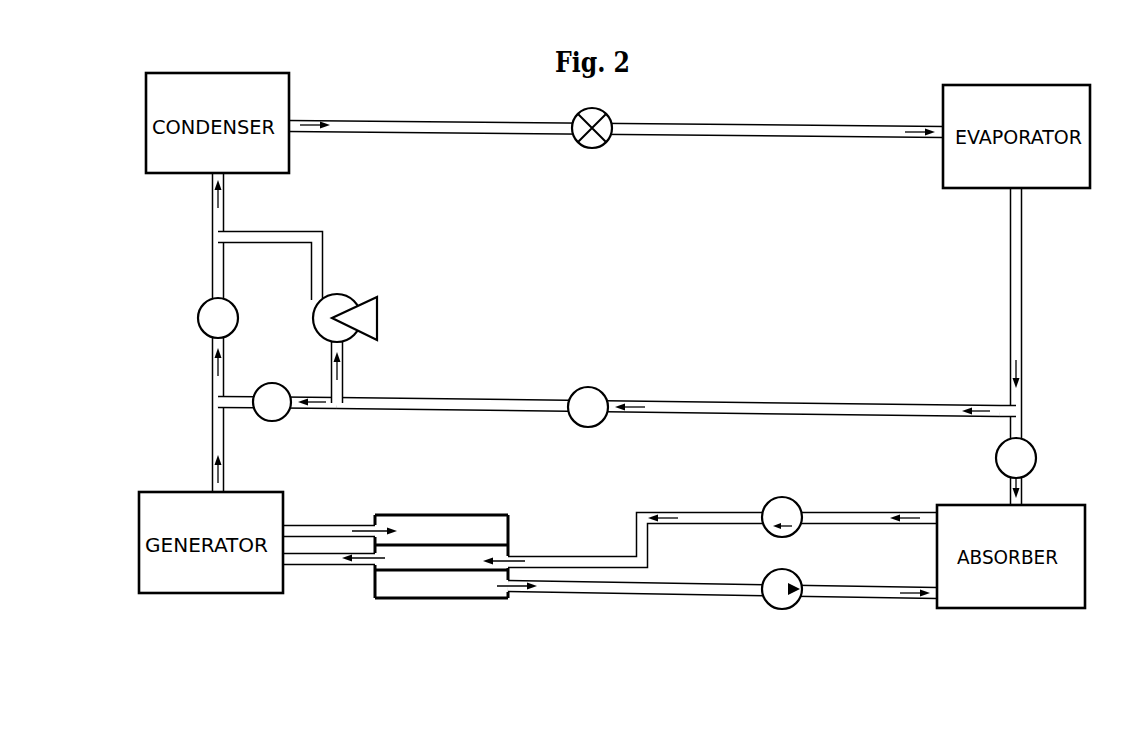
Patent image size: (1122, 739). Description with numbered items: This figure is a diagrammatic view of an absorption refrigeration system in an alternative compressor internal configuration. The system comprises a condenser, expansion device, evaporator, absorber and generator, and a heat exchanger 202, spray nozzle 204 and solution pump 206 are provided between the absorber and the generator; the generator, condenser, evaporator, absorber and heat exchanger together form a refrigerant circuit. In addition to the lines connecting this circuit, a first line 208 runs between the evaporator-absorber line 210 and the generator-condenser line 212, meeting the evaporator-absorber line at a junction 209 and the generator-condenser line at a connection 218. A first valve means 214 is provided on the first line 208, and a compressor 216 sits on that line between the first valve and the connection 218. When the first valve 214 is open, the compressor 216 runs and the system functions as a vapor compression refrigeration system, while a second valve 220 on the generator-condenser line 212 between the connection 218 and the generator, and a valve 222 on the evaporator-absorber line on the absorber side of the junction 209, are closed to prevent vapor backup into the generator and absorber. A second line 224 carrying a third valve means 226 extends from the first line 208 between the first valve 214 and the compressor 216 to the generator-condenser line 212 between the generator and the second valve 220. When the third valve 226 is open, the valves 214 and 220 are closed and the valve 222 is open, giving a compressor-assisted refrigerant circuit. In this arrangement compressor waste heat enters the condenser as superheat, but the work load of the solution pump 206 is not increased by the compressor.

The heat exchanger 202 is at (452, 515).
The spray nozzle 204 is at (773, 608).
The solution pump 206 is at (792, 497).
The first line 208 is at (688, 403).
The junction 209 is at (1022, 418).
The evaporator-absorber line 210 is at (1022, 314).
The generator-condenser line 212 is at (212, 437).
The first valve means 214 is at (598, 387).
The compressor 216 is at (344, 294).
The connection 218 is at (224, 232).
The second valve 220 is at (197, 316).
The valve 222 is at (1036, 466).
The second line 224 is at (302, 409).
The third valve means 226 is at (270, 421).